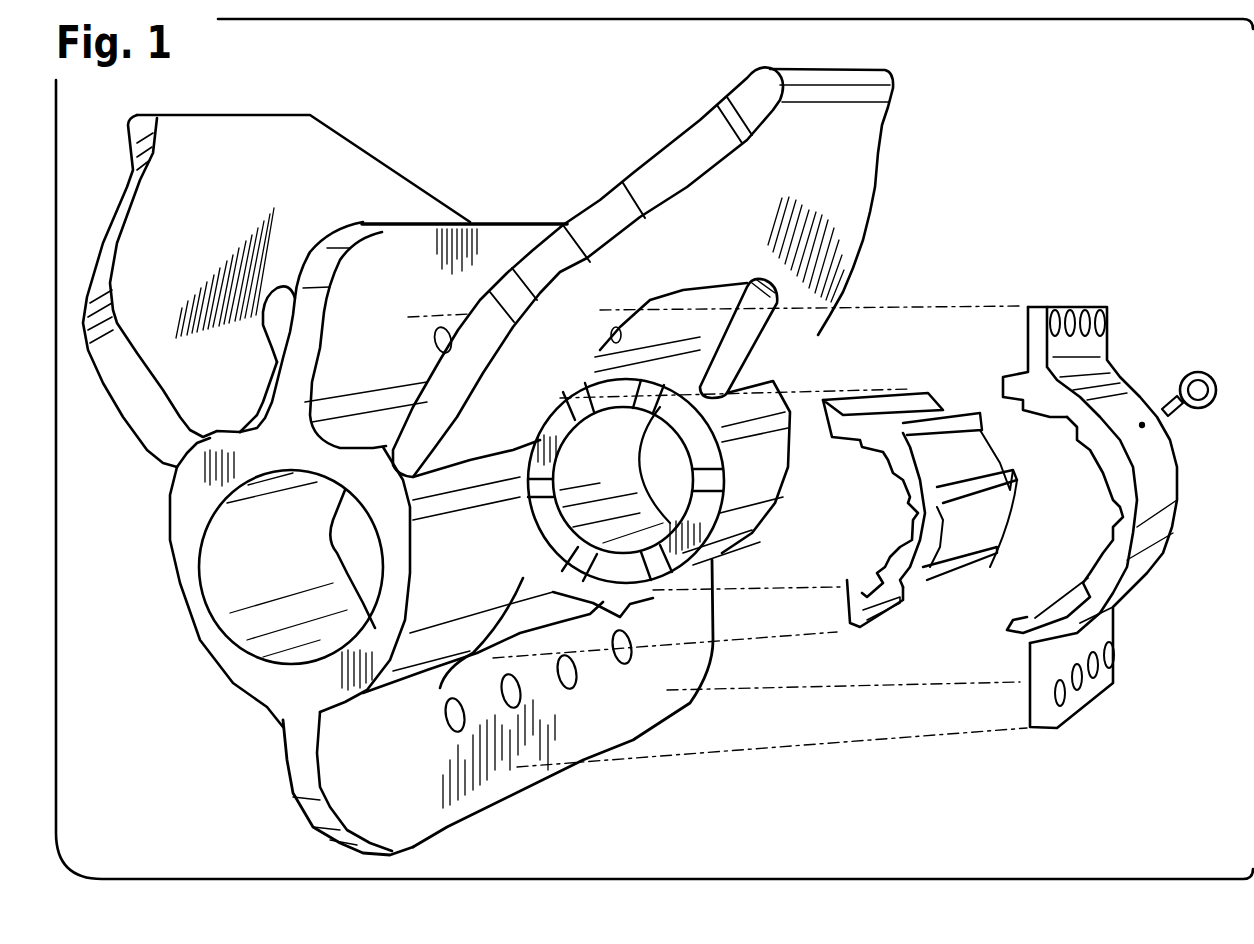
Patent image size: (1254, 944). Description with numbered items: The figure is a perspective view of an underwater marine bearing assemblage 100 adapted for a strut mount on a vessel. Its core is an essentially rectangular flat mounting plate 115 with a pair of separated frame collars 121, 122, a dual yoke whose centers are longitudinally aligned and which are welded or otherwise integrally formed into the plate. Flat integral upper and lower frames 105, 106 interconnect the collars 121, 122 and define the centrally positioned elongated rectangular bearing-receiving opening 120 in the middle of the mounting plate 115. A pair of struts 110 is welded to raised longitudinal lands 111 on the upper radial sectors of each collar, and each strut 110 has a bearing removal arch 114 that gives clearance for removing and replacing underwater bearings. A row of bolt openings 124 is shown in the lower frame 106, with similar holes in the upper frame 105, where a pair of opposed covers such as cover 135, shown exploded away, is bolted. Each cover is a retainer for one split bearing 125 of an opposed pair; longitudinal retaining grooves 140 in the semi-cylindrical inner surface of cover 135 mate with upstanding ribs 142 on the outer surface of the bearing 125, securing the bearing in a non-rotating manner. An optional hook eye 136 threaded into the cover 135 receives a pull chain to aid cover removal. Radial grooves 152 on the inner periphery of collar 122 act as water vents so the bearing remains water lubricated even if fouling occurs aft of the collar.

The underwater marine bearing assemblage 100 is at (572, 67).
The upper frame 105 is at (504, 224).
The lower frame 106 is at (532, 780).
The strut 110 is at (213, 114).
The raised longitudinal land 111 is at (167, 477).
The bearing removal arch 114 is at (281, 314).
The mounting plate 115 is at (207, 696).
The bearing-receiving opening 120 is at (590, 599).
The frame collar 121 is at (183, 578).
The frame collar 122 is at (773, 483).
The bolt openings 124 is at (622, 666).
The split bearing 125 is at (913, 393).
The cover 135 is at (1100, 347).
The hook eye 136 is at (1217, 407).
The retaining grooves 140 is at (1113, 510).
The ribs 142 is at (1012, 458).
The radial grooves 152 is at (330, 548).